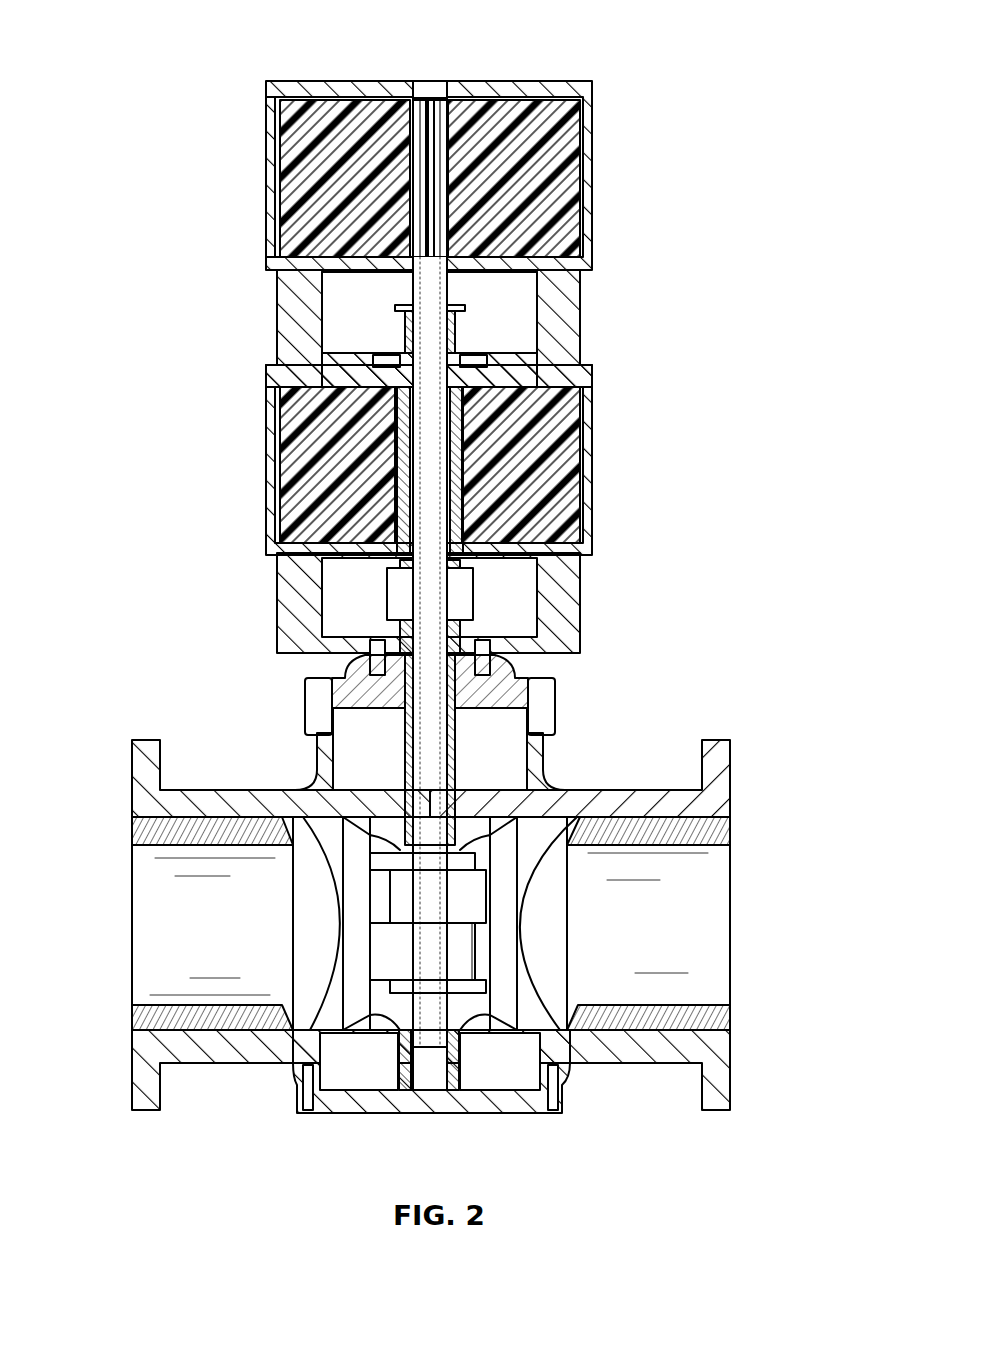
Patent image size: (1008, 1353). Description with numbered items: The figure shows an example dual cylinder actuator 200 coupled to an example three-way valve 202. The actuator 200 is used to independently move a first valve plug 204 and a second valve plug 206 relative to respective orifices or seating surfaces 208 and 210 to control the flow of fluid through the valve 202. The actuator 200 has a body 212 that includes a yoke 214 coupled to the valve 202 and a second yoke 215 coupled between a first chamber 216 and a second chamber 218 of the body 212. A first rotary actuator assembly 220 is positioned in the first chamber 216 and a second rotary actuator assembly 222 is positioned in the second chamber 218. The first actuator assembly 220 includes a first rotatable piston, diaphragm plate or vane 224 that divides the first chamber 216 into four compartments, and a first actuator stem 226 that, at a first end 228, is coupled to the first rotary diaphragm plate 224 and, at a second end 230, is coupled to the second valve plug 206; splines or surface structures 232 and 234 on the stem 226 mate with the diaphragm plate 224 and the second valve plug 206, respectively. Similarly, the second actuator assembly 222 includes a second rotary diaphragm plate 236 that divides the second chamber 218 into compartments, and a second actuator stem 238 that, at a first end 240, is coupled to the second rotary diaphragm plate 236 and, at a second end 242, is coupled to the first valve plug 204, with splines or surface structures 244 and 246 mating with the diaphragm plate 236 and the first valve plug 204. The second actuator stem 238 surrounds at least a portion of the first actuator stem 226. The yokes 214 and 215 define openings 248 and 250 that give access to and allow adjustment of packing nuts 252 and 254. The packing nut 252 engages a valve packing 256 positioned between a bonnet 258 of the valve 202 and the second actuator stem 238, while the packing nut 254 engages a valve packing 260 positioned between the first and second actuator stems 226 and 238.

The actuator 200 is at (776, 50).
The three-way valve 202 is at (688, 738).
The first valve plug 204 is at (548, 1018).
The second valve plug 206 is at (330, 1030).
The orifice or seating surface 208 is at (577, 817).
The orifice or seating surface 210 is at (287, 845).
The body 212 is at (585, 225).
The yoke 214 is at (565, 580).
The second yoke 215 is at (565, 316).
The first chamber 216 is at (275, 136).
The second chamber 218 is at (275, 405).
The first rotary actuator assembly 220 is at (565, 145).
The second rotary actuator assembly 222 is at (565, 450).
The first rotary diaphragm plate 224 is at (290, 216).
The first actuator stem 226 is at (437, 92).
The first end 228 is at (412, 172).
The second end 230 is at (400, 838).
The surface structures 232 is at (445, 192).
The surface structures 234 is at (470, 833).
The second rotary diaphragm plate 236 is at (290, 452).
The second actuator stem 238 is at (562, 462).
The first end 240 is at (370, 360).
The second end 242 is at (400, 855).
The surface structures 244 is at (378, 525).
The surface structures 246 is at (474, 1012).
The opening 248 is at (350, 606).
The opening 250 is at (397, 308).
The packing nut 252 is at (390, 575).
The packing nut 254 is at (330, 325).
The valve packing 256 is at (470, 625).
The bonnet 258 is at (305, 697).
The valve packing 260 is at (467, 358).